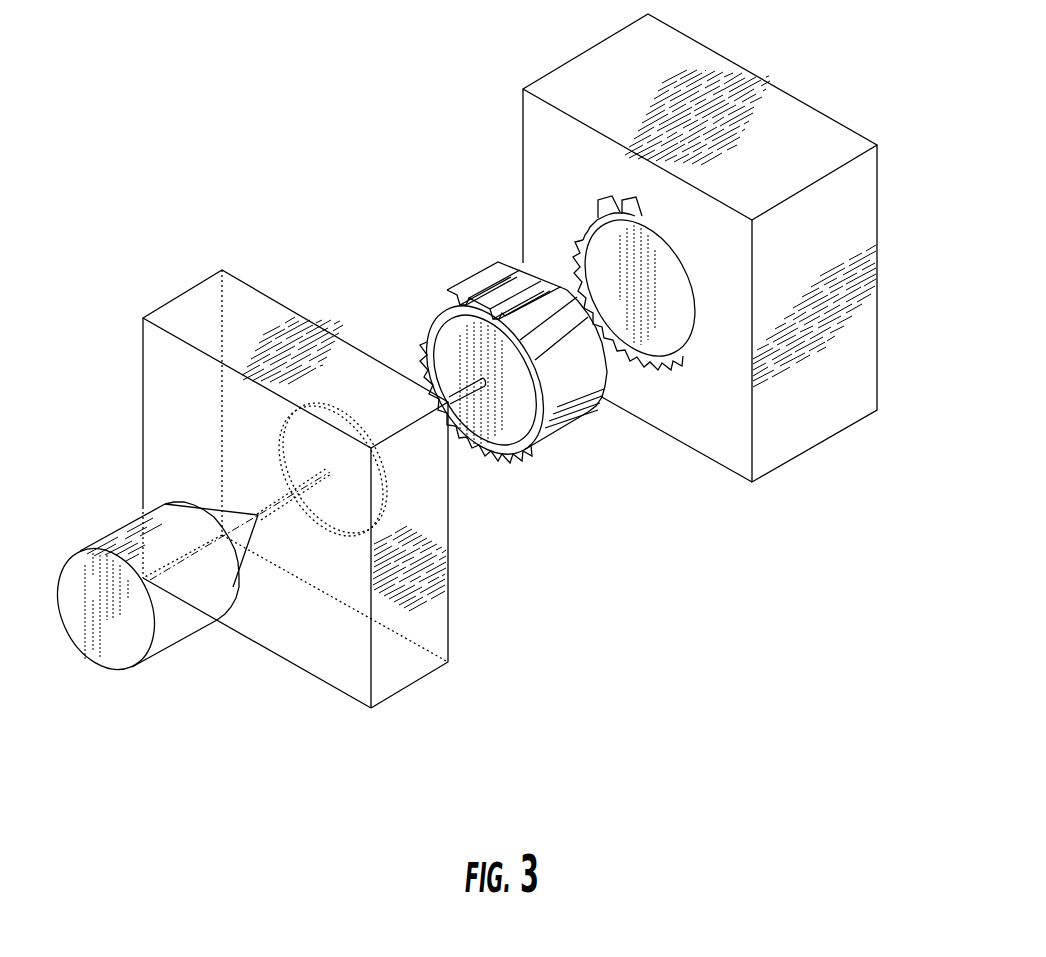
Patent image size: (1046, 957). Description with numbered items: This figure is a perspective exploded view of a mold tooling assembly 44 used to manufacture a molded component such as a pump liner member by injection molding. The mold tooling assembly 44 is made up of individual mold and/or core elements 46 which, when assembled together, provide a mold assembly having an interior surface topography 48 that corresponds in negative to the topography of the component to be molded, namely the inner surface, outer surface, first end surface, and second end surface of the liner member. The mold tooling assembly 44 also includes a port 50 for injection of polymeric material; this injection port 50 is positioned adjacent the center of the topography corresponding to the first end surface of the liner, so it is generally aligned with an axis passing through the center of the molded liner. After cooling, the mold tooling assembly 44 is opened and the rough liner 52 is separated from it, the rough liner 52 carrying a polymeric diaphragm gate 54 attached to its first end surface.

The mold tooling assembly 44 is at (722, 592).
The mold and/or core elements 46 is at (152, 423).
The interior surface topography 48 is at (387, 503).
The port 50 is at (258, 515).
The rough liner 52 is at (460, 284).
The polymeric diaphragm gate 54 is at (533, 453).